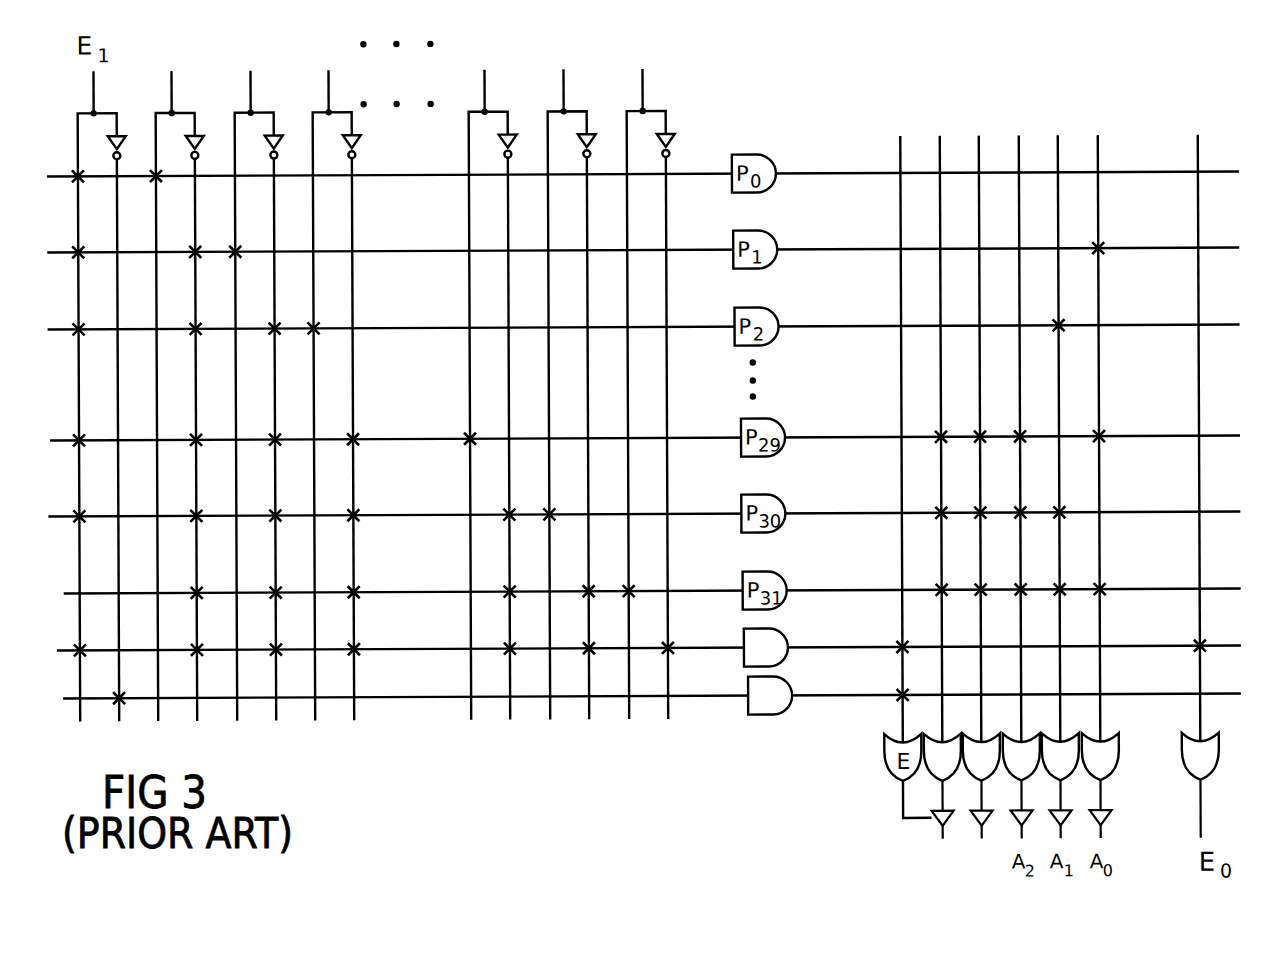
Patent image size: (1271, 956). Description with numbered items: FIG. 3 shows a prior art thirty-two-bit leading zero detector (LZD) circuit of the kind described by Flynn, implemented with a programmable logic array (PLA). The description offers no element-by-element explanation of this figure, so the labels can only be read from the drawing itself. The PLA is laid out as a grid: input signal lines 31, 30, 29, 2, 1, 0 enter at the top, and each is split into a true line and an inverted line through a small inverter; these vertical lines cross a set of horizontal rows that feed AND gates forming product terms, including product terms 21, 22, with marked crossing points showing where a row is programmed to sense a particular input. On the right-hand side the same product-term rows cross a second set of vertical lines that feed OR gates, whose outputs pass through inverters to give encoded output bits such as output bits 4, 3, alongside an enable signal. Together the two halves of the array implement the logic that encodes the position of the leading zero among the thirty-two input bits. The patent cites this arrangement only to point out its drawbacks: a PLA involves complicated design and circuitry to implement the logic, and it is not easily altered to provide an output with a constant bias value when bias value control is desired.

The input line I31 with inverter 31 is at (180, 376).
The input line I30 with inverter 30 is at (259, 376).
The input line I29 with inverter 29 is at (337, 375).
The input line I2 with inverter 2 is at (492, 375).
The input line I1 with inverter 1 is at (572, 374).
The input line I0 with inverter 0 is at (650, 374).
The product term AND gate P21 21 is at (766, 647).
The product term AND gate P22 22 is at (770, 695).
The output OR gate and inverter A4 4 is at (943, 807).
The output OR gate and inverter A3 3 is at (982, 807).